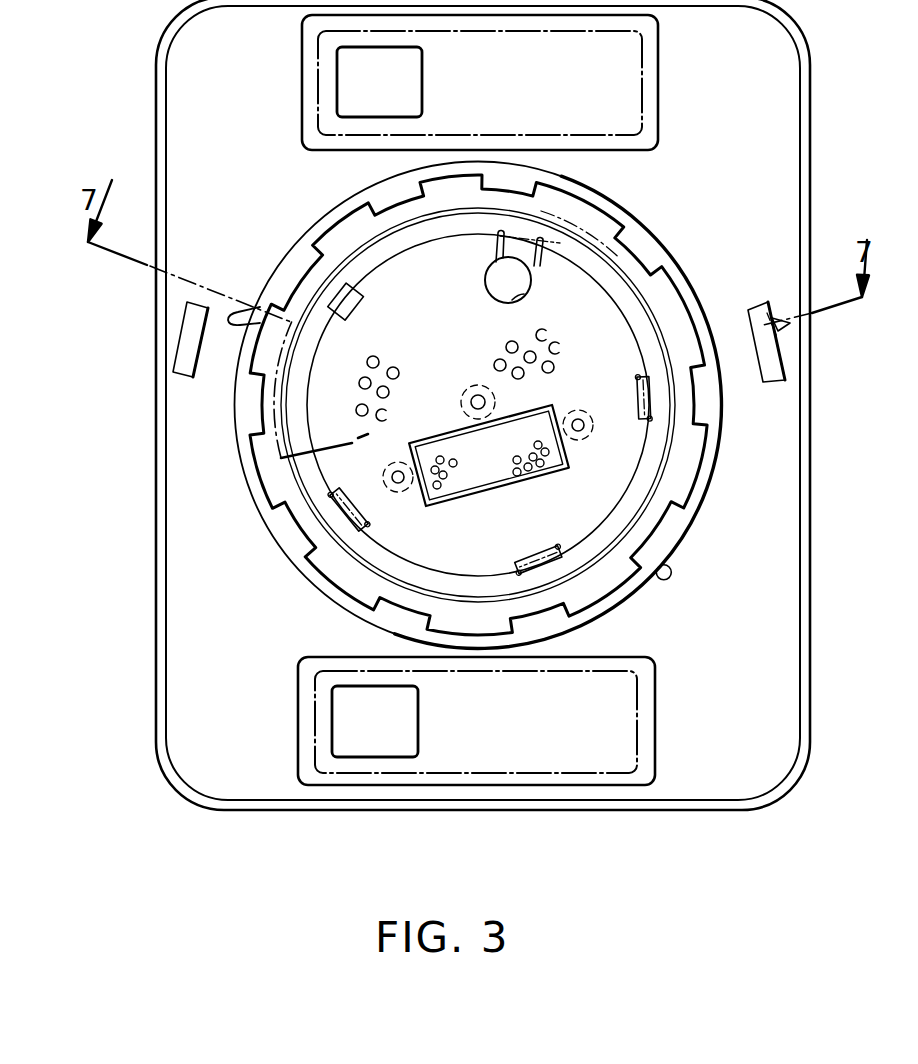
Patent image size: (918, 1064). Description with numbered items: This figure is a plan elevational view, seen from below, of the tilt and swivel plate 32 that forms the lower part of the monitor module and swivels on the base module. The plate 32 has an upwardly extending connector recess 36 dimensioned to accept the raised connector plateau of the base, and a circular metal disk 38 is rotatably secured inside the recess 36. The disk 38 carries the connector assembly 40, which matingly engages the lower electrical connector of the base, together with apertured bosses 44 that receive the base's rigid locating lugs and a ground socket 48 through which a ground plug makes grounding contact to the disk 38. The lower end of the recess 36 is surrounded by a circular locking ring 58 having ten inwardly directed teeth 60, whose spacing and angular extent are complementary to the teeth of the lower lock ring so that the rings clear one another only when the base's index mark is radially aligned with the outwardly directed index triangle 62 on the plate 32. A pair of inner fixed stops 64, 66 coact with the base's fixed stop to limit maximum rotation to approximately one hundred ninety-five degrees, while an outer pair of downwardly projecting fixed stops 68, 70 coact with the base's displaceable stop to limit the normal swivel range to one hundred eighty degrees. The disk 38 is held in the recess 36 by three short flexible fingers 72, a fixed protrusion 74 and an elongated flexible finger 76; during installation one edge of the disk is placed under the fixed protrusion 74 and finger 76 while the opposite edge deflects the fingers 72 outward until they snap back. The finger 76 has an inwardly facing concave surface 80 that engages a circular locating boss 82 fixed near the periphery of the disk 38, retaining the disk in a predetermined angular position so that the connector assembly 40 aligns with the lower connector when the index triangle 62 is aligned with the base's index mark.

The tilt and swivel plate 32 is at (250, 89).
The connector recess 36 is at (606, 298).
The circular metal disk 38 is at (470, 313).
The connector assembly 40 is at (488, 480).
The apertured bosses 44 is at (576, 410).
The ground socket 48 is at (462, 397).
The circular locking ring 58 is at (607, 205).
The inwardly directed teeth 60 is at (390, 200).
The index triangle 62 is at (793, 332).
The inner fixed stop 64 is at (670, 572).
The inner fixed stop 66 is at (232, 326).
The outer fixed stop 68 is at (193, 307).
The outer fixed stop 70 is at (767, 383).
The flexible fingers 72 is at (348, 497).
The fixed protrusion 74 is at (346, 326).
The elongated flexible finger 76 is at (532, 252).
The concave surface 80 is at (492, 258).
The circular locating boss 82 is at (518, 289).